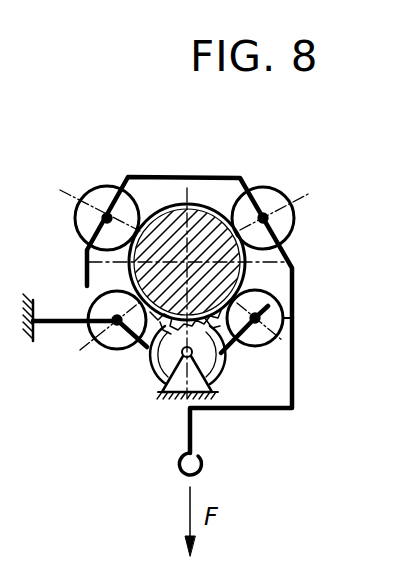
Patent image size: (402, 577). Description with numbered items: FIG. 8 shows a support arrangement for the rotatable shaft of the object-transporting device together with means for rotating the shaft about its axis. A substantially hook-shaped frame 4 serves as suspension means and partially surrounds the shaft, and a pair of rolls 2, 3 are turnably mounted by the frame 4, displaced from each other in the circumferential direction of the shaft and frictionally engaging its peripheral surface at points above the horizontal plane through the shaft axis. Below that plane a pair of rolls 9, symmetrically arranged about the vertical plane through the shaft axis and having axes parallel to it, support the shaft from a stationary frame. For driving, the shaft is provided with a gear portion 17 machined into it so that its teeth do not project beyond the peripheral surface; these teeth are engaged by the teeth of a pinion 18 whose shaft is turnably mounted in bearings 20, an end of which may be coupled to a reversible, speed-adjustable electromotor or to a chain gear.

The roll 2 is at (103, 195).
The roll 3 is at (272, 200).
The hook-shaped frame 4 is at (292, 380).
The rolls 9 is at (113, 345).
The gear portion 17 is at (233, 292).
The pinion 18 is at (221, 353).
The bearings 20 is at (160, 392).